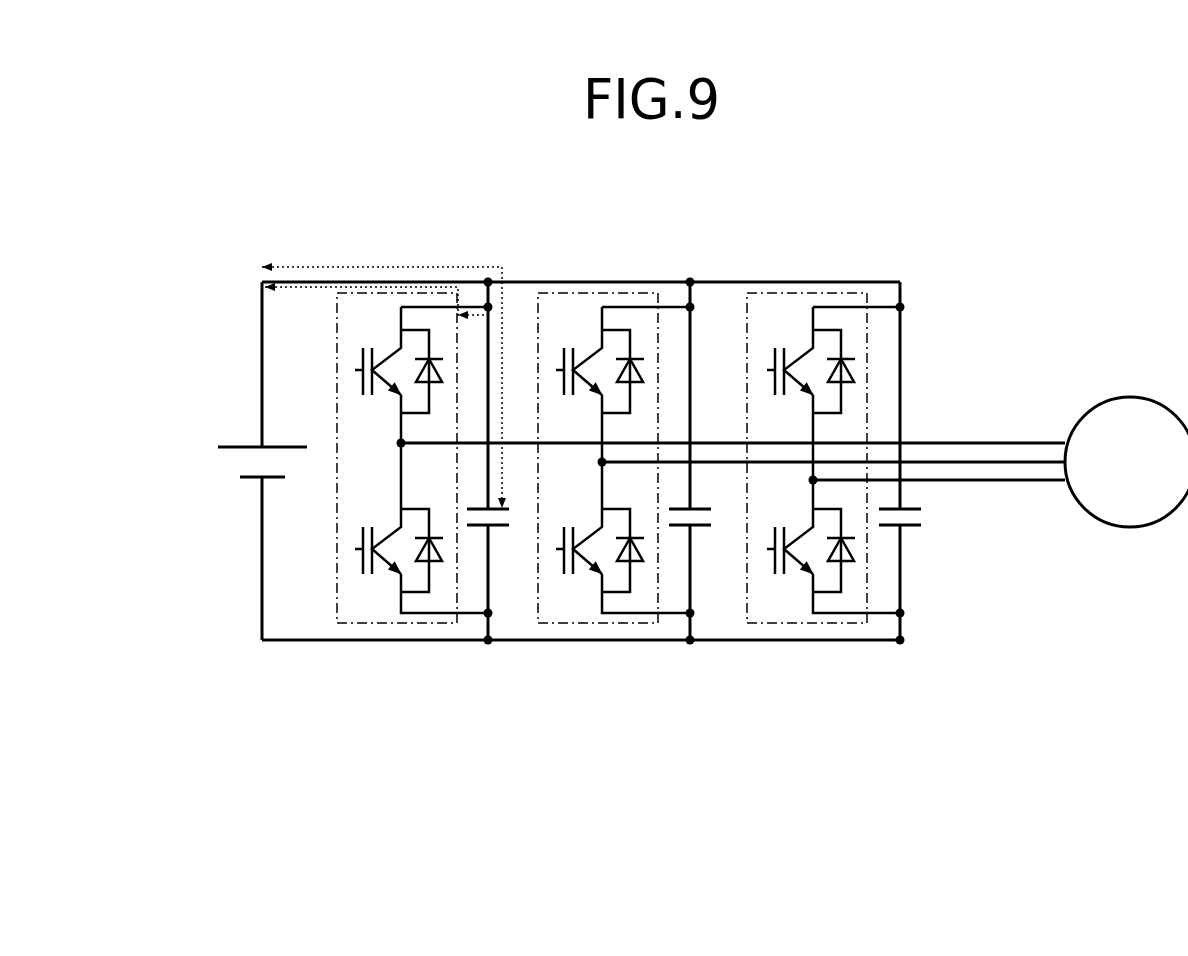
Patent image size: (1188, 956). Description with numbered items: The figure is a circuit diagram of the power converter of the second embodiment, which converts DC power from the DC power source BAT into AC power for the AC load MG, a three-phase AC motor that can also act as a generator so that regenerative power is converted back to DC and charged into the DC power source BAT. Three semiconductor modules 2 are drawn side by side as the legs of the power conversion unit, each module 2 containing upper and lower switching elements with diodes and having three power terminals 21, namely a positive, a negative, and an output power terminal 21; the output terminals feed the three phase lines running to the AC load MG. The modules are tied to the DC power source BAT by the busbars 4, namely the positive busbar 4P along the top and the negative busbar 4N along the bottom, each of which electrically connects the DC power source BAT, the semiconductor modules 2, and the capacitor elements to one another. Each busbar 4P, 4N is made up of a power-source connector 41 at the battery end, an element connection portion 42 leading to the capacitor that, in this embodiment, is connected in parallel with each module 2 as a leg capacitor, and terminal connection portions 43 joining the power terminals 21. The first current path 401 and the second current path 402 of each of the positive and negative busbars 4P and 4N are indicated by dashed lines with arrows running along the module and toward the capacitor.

The semiconductor module 2 is at (350, 625).
The power terminal 21 is at (460, 298).
The busbar 4 is at (581, 483).
The positive busbar 4P is at (340, 280).
The negative busbar 4N is at (397, 642).
The power-source connector 41 is at (262, 282).
The element connection portion 42 is at (485, 507).
The terminal connection portion 43 is at (476, 300).
The first current path 401 is at (377, 301).
The second current path 402 is at (384, 373).
The DC power source BAT is at (243, 463).
The AC load MG is at (1126, 462).